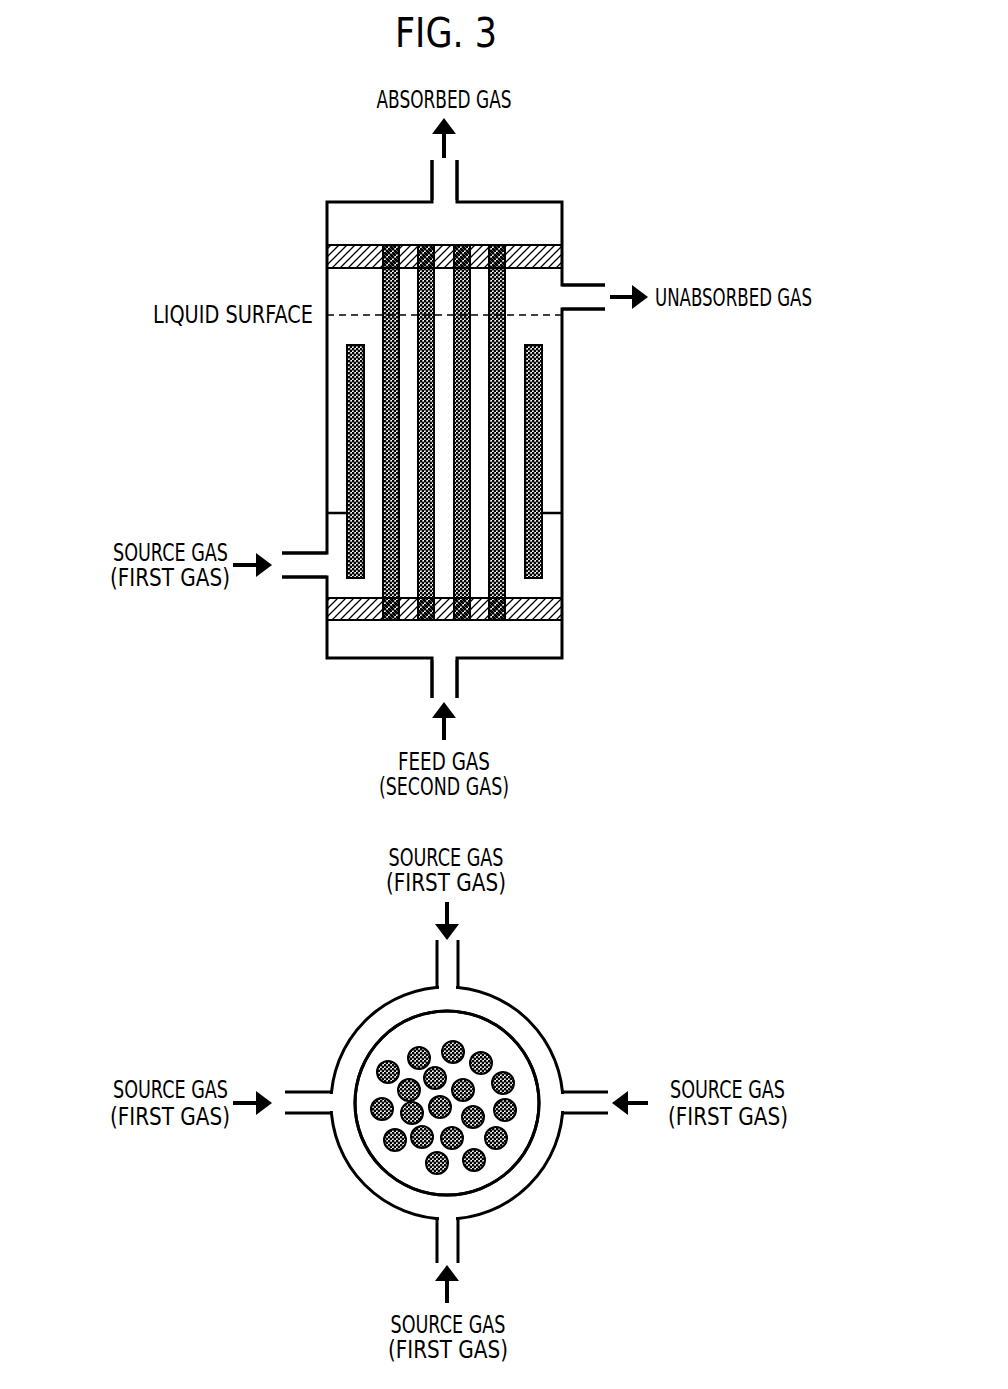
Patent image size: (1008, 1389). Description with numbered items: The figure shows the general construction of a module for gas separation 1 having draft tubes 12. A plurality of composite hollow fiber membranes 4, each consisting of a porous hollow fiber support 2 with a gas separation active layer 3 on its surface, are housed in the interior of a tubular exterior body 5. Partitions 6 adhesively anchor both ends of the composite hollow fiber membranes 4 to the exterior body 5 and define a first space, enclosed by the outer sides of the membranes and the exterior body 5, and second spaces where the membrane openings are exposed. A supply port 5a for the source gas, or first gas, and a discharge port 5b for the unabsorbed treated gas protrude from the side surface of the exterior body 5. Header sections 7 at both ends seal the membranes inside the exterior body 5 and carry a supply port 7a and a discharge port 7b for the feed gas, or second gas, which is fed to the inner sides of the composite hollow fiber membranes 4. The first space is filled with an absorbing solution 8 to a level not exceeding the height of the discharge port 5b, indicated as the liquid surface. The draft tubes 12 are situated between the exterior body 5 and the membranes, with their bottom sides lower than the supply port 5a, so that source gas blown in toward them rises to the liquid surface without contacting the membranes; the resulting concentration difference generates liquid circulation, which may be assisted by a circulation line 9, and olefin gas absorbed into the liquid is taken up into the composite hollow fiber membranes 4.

The module for gas separation 1 is at (665, 161).
The porous hollow fiber support 2 is at (507, 283).
The gas separation active layer 3 is at (507, 300).
The composite hollow fiber membrane 4 is at (532, 726).
The exterior body 5 is at (327, 406).
The source gas supply port 5a is at (305, 580).
The source gas discharge port 5b is at (590, 311).
The partition 6 is at (562, 608).
The header section 7 is at (562, 637).
The feed gas supply port 7a is at (458, 678).
The feed gas discharge port 7b is at (458, 178).
The absorbing solution 8 is at (552, 467).
The circulation line 9 is at (540, 1062).
The draft tube 12 is at (555, 427).